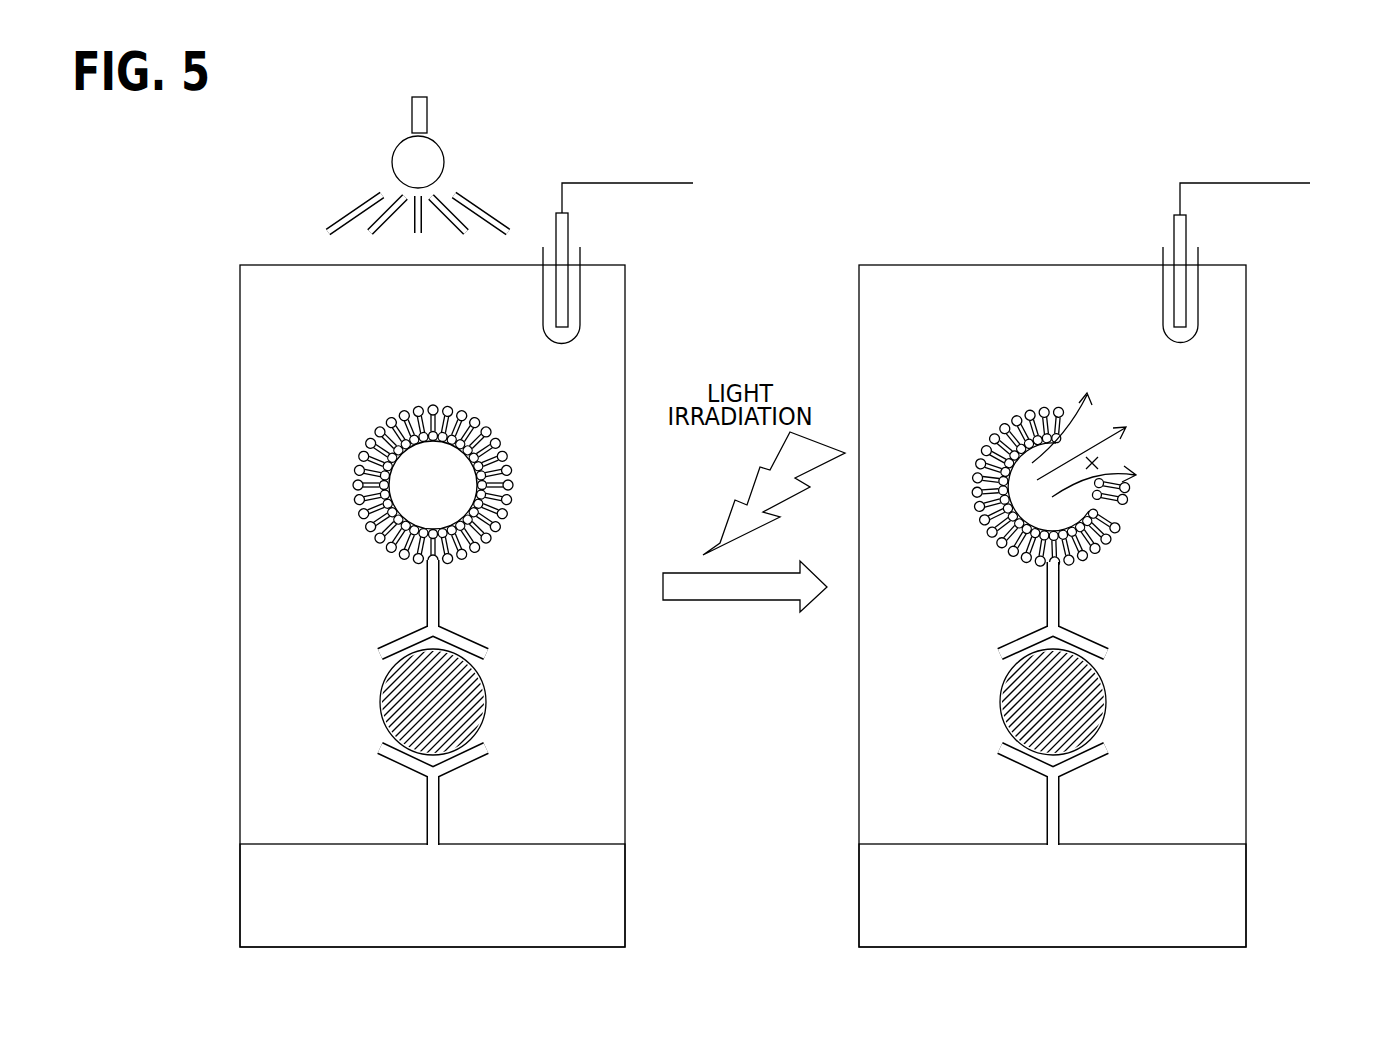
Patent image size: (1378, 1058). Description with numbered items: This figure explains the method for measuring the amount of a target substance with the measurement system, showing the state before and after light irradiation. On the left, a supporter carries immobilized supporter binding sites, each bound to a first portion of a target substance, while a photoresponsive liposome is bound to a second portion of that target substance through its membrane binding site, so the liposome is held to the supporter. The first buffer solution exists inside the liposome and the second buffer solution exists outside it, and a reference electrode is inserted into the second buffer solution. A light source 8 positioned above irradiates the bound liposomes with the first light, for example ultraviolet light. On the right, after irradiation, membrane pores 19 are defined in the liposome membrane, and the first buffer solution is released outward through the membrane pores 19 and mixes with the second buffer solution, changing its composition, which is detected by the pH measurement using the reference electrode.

The light source 8 is at (443, 148).
The membrane pore 19 is at (1100, 462).